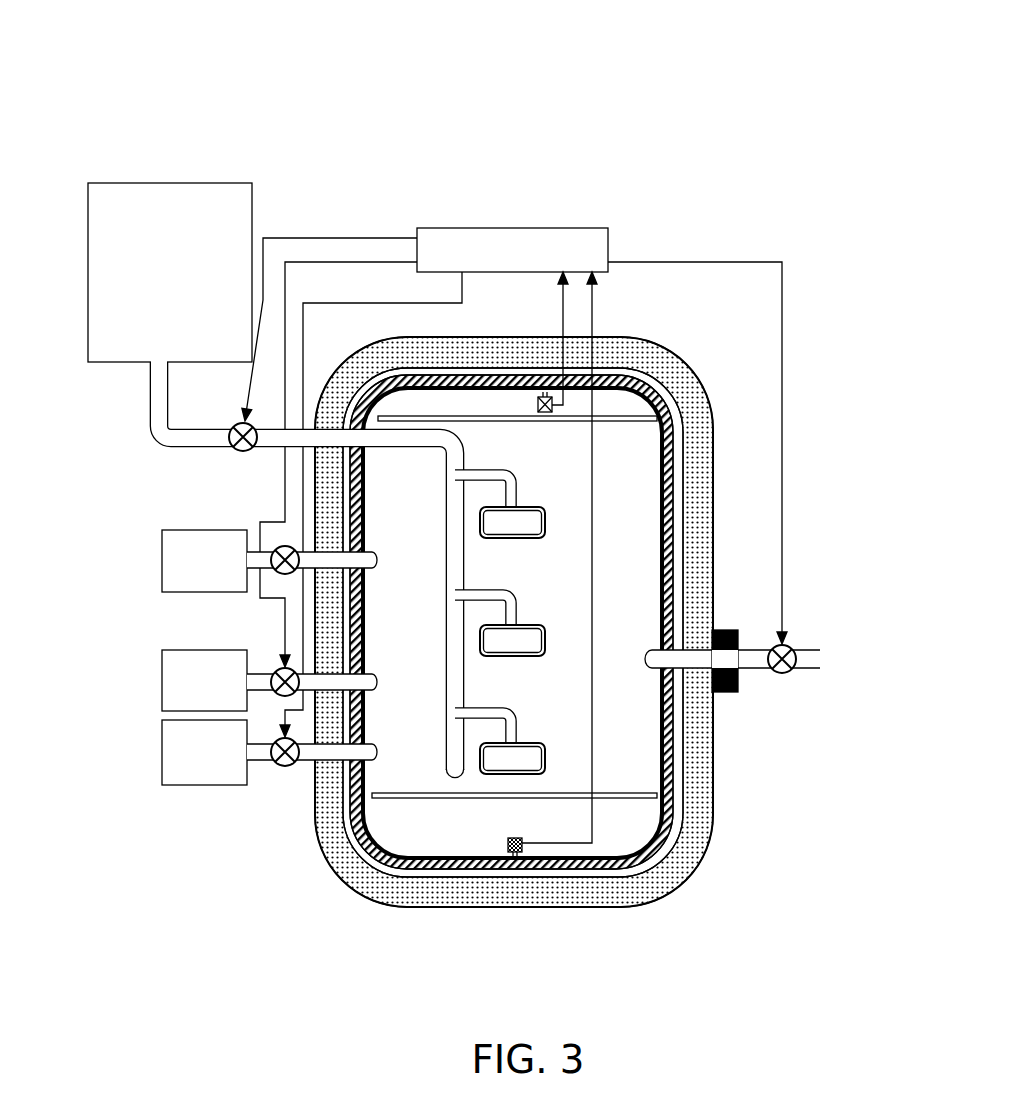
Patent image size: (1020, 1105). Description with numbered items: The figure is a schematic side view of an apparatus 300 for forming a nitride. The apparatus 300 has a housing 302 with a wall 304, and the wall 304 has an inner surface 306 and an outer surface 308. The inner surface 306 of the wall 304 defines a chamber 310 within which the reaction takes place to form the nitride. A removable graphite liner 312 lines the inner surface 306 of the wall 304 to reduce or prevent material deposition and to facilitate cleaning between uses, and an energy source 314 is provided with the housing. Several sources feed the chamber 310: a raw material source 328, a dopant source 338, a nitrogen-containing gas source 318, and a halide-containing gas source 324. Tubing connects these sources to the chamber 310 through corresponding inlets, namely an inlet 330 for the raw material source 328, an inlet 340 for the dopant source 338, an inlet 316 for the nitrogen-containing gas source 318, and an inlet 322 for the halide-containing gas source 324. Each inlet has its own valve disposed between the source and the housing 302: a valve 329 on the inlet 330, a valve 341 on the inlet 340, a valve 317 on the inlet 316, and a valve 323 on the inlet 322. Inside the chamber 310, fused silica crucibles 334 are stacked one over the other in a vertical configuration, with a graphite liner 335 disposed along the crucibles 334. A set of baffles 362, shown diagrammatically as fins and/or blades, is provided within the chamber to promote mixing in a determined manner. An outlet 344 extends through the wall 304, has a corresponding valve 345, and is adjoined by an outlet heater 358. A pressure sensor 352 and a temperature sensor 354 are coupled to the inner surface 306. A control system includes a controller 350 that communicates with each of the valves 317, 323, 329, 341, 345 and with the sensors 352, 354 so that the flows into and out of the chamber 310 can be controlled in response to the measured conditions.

The apparatus 300 is at (760, 55).
The housing 302 is at (515, 621).
The wall 304 is at (436, 862).
The inner surface 306 is at (514, 621).
The outer surface 308 is at (638, 338).
The chamber 310 is at (642, 824).
The graphite liner 312 is at (455, 858).
The energy source 314 is at (514, 621).
The inlet 316 is at (380, 676).
The valve 317 is at (288, 660).
The nitrogen-containing gas source 318 is at (160, 680).
The inlet 322 is at (380, 760).
The valve 323 is at (285, 770).
The halide-containing gas source 324 is at (160, 750).
The raw material source 328 is at (173, 183).
The valve 329 is at (243, 452).
The inlet 330 is at (158, 437).
The crucibles 334 is at (520, 528).
The liner 335 is at (517, 503).
The dopant source 338 is at (160, 558).
The inlet 340 is at (380, 556).
The valve 341 is at (285, 575).
The outlet 344 is at (758, 668).
The valve 345 is at (788, 676).
The controller 350 is at (512, 228).
The pressure sensor 352 is at (525, 840).
The temperature sensor 354 is at (545, 414).
The outlet heater 358 is at (730, 630).
The baffles 362 is at (622, 421).